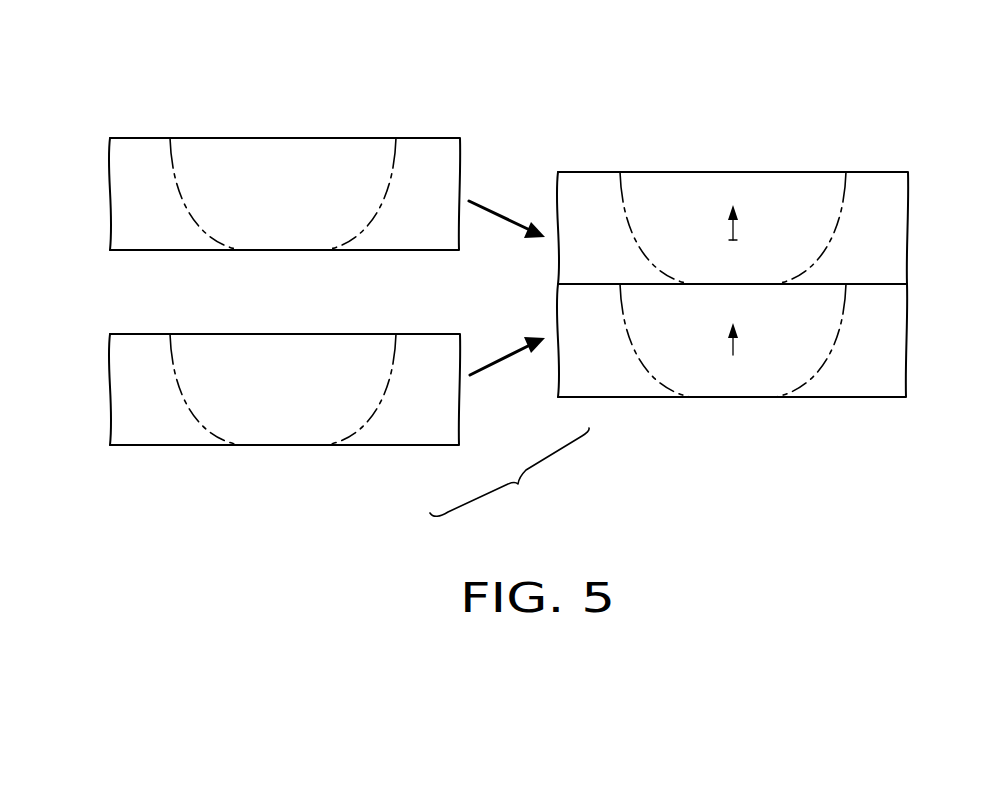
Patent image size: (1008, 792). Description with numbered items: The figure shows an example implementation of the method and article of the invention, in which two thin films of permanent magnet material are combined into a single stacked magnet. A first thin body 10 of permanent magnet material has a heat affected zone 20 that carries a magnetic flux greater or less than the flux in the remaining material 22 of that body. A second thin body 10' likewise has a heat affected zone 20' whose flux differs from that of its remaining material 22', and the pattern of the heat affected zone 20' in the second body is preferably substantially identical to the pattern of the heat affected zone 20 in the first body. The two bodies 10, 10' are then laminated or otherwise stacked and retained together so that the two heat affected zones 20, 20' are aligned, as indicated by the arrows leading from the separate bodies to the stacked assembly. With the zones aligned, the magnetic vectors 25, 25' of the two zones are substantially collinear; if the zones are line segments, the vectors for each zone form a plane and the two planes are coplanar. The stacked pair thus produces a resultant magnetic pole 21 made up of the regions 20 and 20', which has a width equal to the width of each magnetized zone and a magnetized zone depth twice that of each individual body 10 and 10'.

The first thin body 10 is at (285, 147).
The second thin body 10' is at (285, 451).
The heat affected zone 20 is at (508, 176).
The heat affected zone 20' is at (473, 372).
The resultant magnetic pole 21 is at (843, 140).
The remaining material 22 is at (327, 188).
The remaining material 22' is at (397, 407).
The magnetic vector 25 is at (761, 183).
The magnetic vector 25' is at (748, 393).